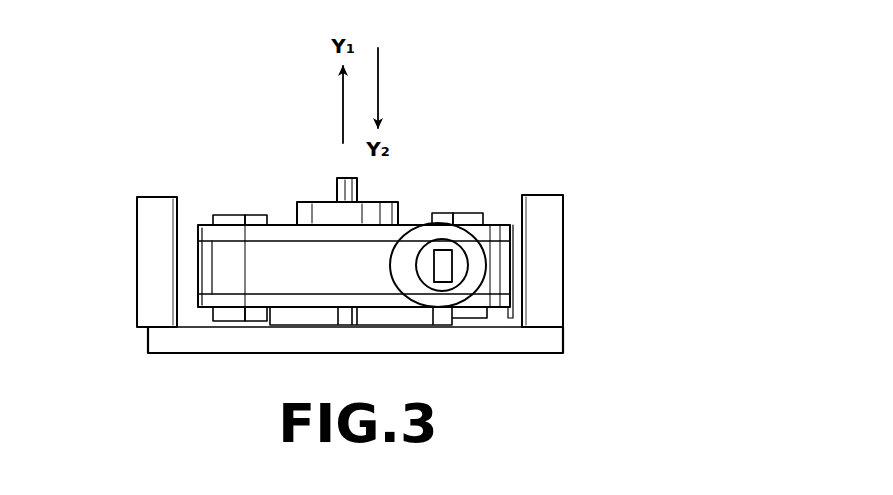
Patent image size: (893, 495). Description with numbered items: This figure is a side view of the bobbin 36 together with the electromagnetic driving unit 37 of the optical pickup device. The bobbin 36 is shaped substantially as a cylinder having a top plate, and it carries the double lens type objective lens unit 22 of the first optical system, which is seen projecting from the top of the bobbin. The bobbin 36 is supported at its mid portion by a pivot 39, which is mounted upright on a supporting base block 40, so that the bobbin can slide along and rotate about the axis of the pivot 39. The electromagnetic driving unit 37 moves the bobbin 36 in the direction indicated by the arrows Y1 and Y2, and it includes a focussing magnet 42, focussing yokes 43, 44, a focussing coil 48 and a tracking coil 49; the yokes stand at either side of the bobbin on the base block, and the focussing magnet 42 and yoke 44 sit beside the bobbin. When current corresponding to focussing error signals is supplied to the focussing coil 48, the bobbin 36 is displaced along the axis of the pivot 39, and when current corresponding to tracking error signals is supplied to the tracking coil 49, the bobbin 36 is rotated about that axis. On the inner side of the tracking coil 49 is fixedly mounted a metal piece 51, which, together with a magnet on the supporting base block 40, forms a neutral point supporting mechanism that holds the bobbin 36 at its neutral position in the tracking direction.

The double lens type objective lens unit 22 is at (388, 196).
The bobbin 36 is at (205, 226).
The electromagnetic driving unit 37 is at (630, 173).
The pivot 39 is at (335, 183).
The supporting base block 40 is at (540, 337).
The focussing magnet 42 is at (233, 215).
The focussing yoke 43 is at (137, 255).
The focussing yoke 44 is at (259, 215).
The focussing coil 48 is at (220, 280).
The tracking coil 49 is at (418, 242).
The metal piece 51 is at (443, 268).